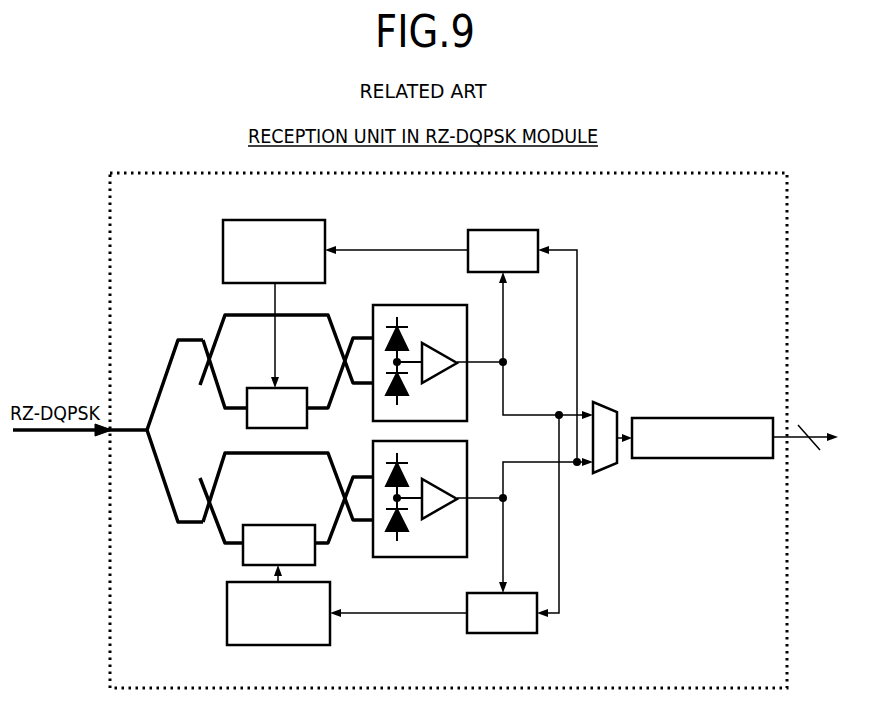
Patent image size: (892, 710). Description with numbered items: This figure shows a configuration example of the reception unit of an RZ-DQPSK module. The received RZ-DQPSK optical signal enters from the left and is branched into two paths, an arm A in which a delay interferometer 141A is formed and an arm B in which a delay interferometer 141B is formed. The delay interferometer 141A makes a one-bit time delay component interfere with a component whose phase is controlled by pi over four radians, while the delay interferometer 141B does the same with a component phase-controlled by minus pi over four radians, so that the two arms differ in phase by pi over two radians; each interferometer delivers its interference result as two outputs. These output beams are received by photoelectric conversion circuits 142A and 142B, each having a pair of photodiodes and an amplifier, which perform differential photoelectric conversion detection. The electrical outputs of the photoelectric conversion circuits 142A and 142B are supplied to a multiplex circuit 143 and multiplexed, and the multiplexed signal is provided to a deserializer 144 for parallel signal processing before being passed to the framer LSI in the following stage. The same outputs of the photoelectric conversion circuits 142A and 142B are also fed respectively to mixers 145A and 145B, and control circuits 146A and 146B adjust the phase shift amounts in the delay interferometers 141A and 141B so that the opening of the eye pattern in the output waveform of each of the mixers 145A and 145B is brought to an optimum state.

The delay interferometer 141A is at (222, 310).
The delay interferometer 141B is at (221, 557).
The photoelectric conversion circuit 142A is at (390, 305).
The photoelectric conversion circuit 142B is at (397, 557).
The multiplex circuit 143 is at (605, 402).
The deserializer 144 is at (702, 418).
The mixer 145A is at (485, 230).
The mixer 145B is at (493, 633).
The control circuit 146A is at (255, 220).
The control circuit 146B is at (252, 645).